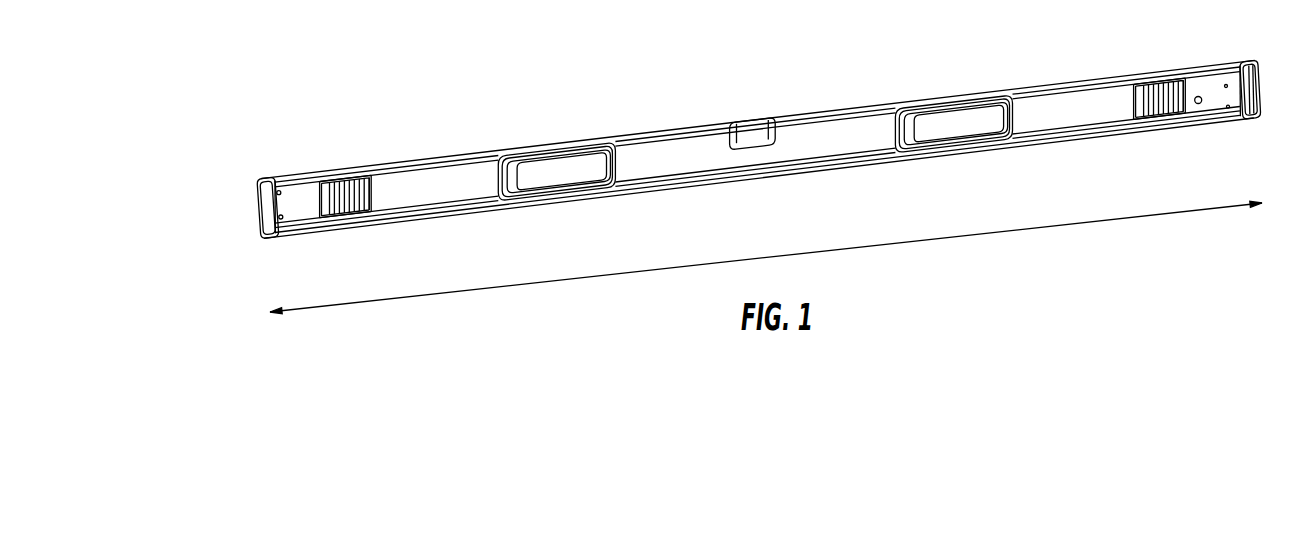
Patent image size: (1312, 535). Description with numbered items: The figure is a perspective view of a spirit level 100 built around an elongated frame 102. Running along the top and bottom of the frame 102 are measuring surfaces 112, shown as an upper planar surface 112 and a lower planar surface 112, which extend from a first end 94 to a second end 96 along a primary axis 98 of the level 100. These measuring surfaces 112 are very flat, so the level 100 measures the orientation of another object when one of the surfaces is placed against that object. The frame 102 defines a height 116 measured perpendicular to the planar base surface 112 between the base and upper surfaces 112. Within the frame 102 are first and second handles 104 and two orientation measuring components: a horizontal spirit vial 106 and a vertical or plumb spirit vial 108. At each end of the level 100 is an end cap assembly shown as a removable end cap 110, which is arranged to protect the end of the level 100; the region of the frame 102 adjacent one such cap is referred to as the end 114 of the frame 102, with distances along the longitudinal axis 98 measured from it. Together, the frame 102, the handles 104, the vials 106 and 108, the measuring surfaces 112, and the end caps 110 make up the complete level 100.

The spirit level 100 is at (751, 158).
The first end 94 is at (257, 202).
The second end 96 is at (1252, 86).
The primary axis 98 is at (785, 257).
The frame 102 is at (815, 155).
The handle 104 is at (570, 173).
The horizontal spirit vial 106 is at (757, 124).
The vertical or plumb spirit vial 108 is at (1165, 114).
The end cap 110 is at (1258, 118).
The measuring surface 112 is at (437, 220).
The end of frame 114 is at (1134, 106).
The height of frame 116 is at (694, 187).